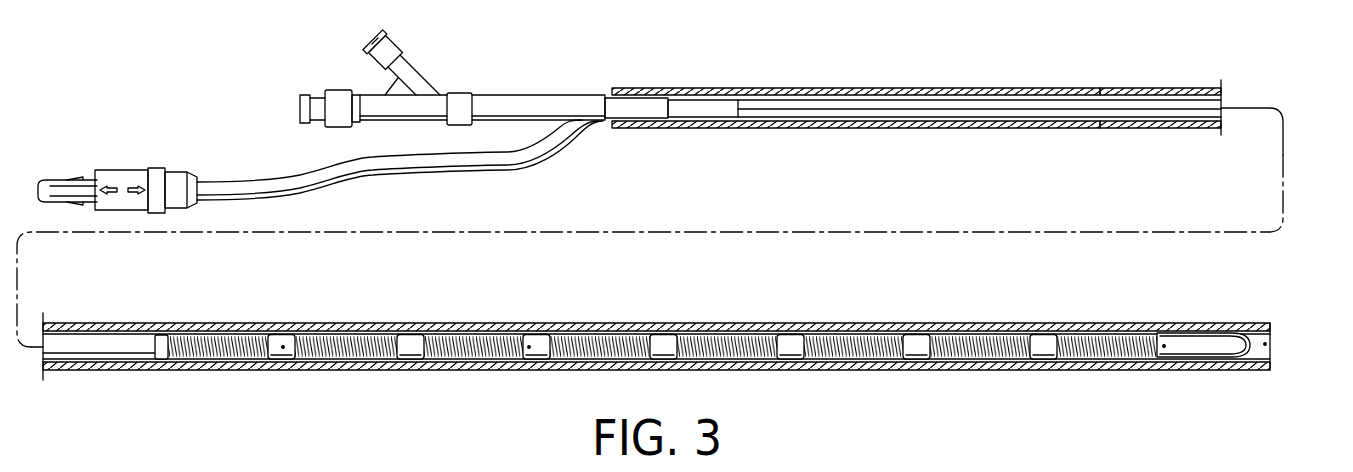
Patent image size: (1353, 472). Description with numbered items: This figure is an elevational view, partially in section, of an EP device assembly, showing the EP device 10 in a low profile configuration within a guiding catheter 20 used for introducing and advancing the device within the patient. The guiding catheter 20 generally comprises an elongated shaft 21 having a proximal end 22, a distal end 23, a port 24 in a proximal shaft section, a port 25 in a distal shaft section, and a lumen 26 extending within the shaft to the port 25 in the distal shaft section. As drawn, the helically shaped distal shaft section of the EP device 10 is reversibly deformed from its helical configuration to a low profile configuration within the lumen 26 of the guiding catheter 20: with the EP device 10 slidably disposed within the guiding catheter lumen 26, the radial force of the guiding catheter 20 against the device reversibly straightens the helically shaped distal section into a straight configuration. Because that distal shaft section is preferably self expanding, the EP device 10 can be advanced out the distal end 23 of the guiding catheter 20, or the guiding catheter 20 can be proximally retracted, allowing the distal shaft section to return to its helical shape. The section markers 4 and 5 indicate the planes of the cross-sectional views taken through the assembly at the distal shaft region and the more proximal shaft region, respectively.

The EP device 10 is at (1040, 108).
The guiding catheter 20 is at (938, 88).
The elongated shaft 21 is at (1120, 88).
The proximal end 22 is at (648, 91).
The distal end 23 is at (1205, 323).
The port 24 is at (607, 96).
The port 25 is at (1270, 353).
The lumen 26 is at (1252, 357).
The section line 4- 4 is at (1122, 332).
The section line 5- 5 is at (283, 347).